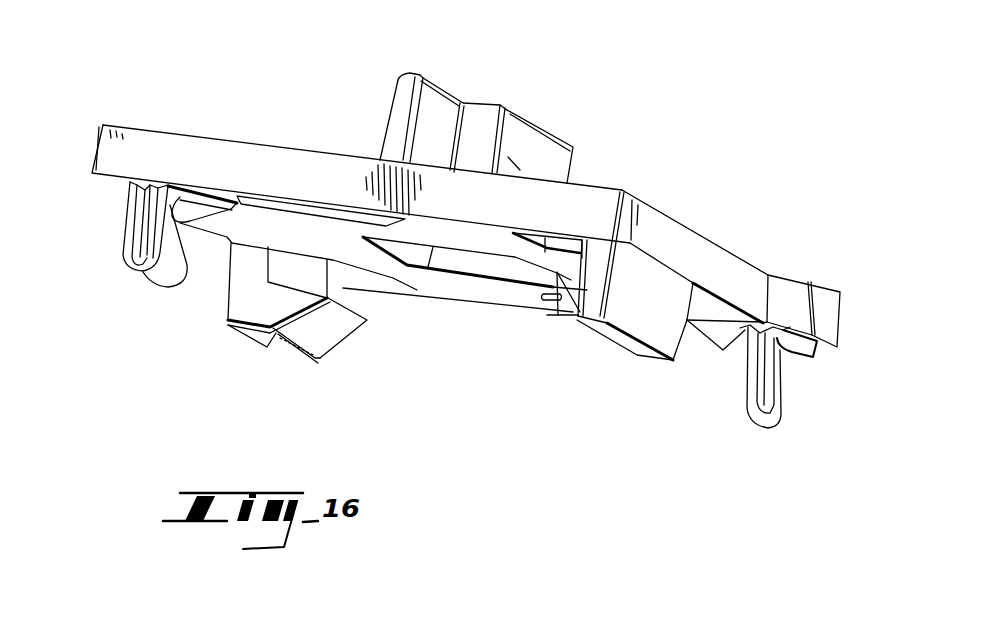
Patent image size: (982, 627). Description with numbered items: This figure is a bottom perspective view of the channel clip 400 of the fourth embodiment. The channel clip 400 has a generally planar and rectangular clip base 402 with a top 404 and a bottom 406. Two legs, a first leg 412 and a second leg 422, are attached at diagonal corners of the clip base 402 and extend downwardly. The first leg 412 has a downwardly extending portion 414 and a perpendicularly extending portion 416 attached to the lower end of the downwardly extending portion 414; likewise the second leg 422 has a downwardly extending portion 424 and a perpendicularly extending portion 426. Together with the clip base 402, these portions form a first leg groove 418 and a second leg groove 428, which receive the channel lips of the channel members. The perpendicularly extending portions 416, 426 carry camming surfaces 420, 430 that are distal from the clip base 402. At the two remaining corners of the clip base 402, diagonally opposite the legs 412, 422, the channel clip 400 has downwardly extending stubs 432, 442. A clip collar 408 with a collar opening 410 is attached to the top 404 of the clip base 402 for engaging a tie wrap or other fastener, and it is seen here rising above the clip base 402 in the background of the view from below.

The channel clip 400 is at (675, 120).
The clip base 402 is at (78, 128).
The top 404 is at (257, 128).
The bottom 406 is at (447, 285).
The clip collar 408 is at (480, 103).
The collar opening 410 is at (520, 130).
The first leg 412 is at (228, 322).
The downwardly extending portion 414 is at (233, 285).
The perpendicularly extending portion 416 is at (253, 340).
The first leg groove 418 is at (277, 330).
The camming surface 420 is at (352, 343).
The second leg 422 is at (680, 340).
The downwardly extending portion 424 is at (683, 343).
The perpendicularly extending portion 426 is at (613, 345).
The second leg groove 428 is at (568, 270).
The camming surface 430 is at (566, 295).
The downwardly extending stub 432 is at (125, 243).
The downwardly extending stub 442 is at (787, 397).